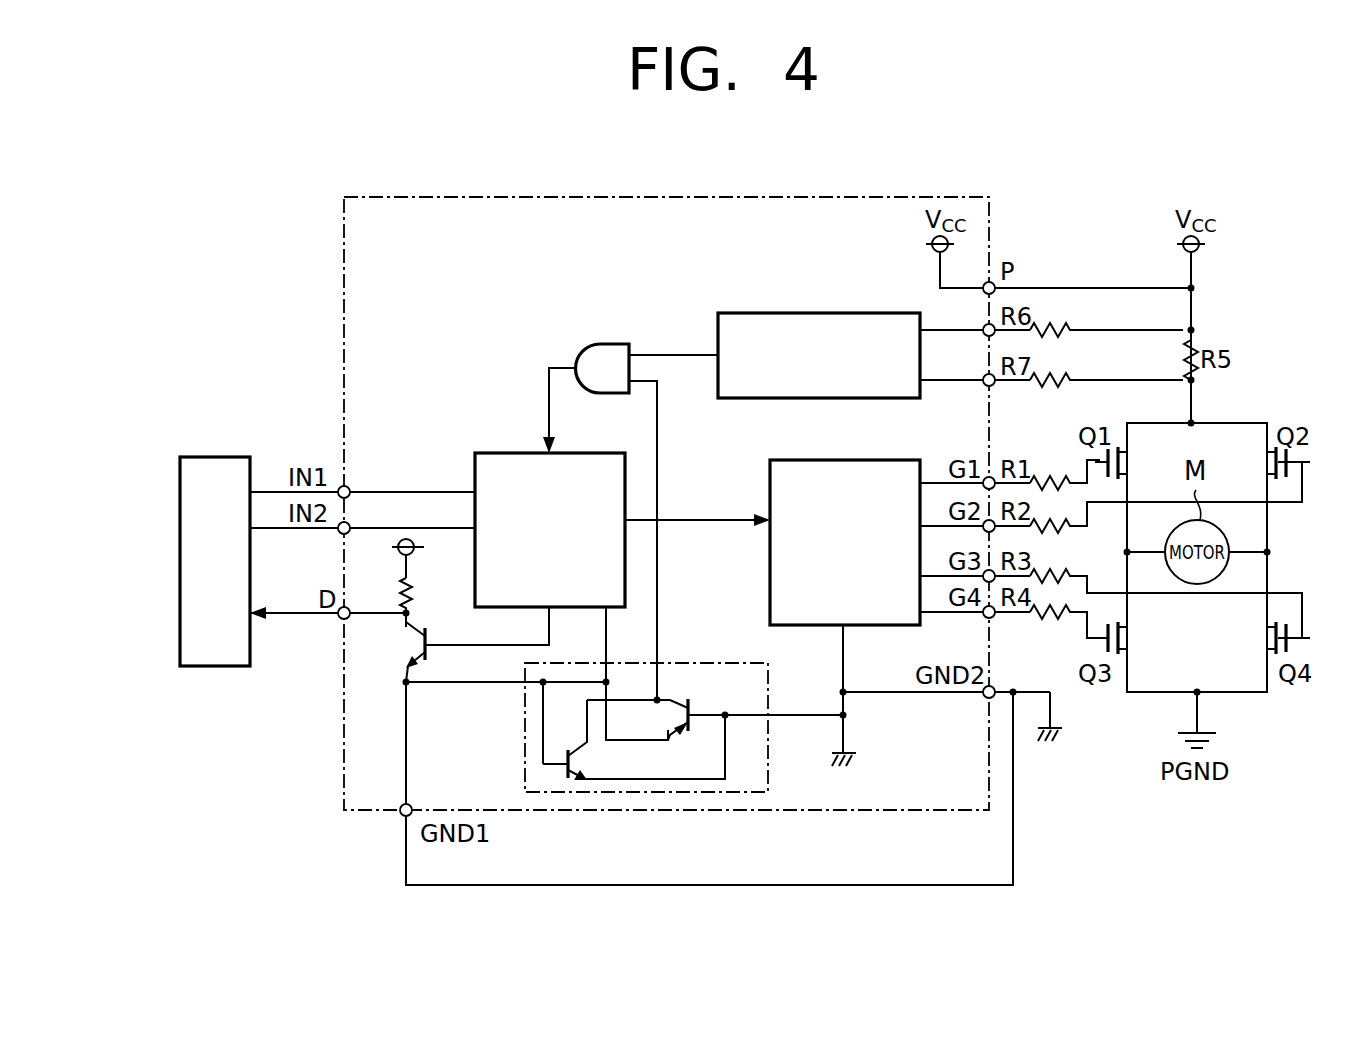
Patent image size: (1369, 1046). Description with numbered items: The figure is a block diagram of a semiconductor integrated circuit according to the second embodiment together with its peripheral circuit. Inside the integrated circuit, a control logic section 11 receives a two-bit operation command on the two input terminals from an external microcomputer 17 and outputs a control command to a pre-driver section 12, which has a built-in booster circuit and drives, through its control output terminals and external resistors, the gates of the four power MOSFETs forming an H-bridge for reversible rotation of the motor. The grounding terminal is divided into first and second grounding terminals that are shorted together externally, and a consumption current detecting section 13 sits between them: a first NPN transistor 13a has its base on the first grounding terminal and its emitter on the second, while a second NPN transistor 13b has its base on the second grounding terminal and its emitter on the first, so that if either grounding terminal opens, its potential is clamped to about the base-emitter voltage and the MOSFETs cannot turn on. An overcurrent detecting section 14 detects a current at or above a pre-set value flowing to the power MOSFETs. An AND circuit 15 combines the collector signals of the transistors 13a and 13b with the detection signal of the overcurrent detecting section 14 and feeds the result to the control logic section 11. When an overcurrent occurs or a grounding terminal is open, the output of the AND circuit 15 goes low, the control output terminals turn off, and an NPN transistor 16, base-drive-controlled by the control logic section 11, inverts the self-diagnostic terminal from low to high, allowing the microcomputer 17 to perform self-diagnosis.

The control logic section 11 is at (500, 453).
The pre-driver section 12 is at (790, 460).
The consumption current detecting circuit 13 is at (684, 709).
The first NPN transistor 13a is at (590, 764).
The second NPN transistor 13b is at (698, 706).
The overcurrent detecting section 14 is at (784, 313).
The AND circuit 15 is at (604, 343).
The NPN transistor 16 is at (430, 632).
The microcomputer 17 is at (228, 455).